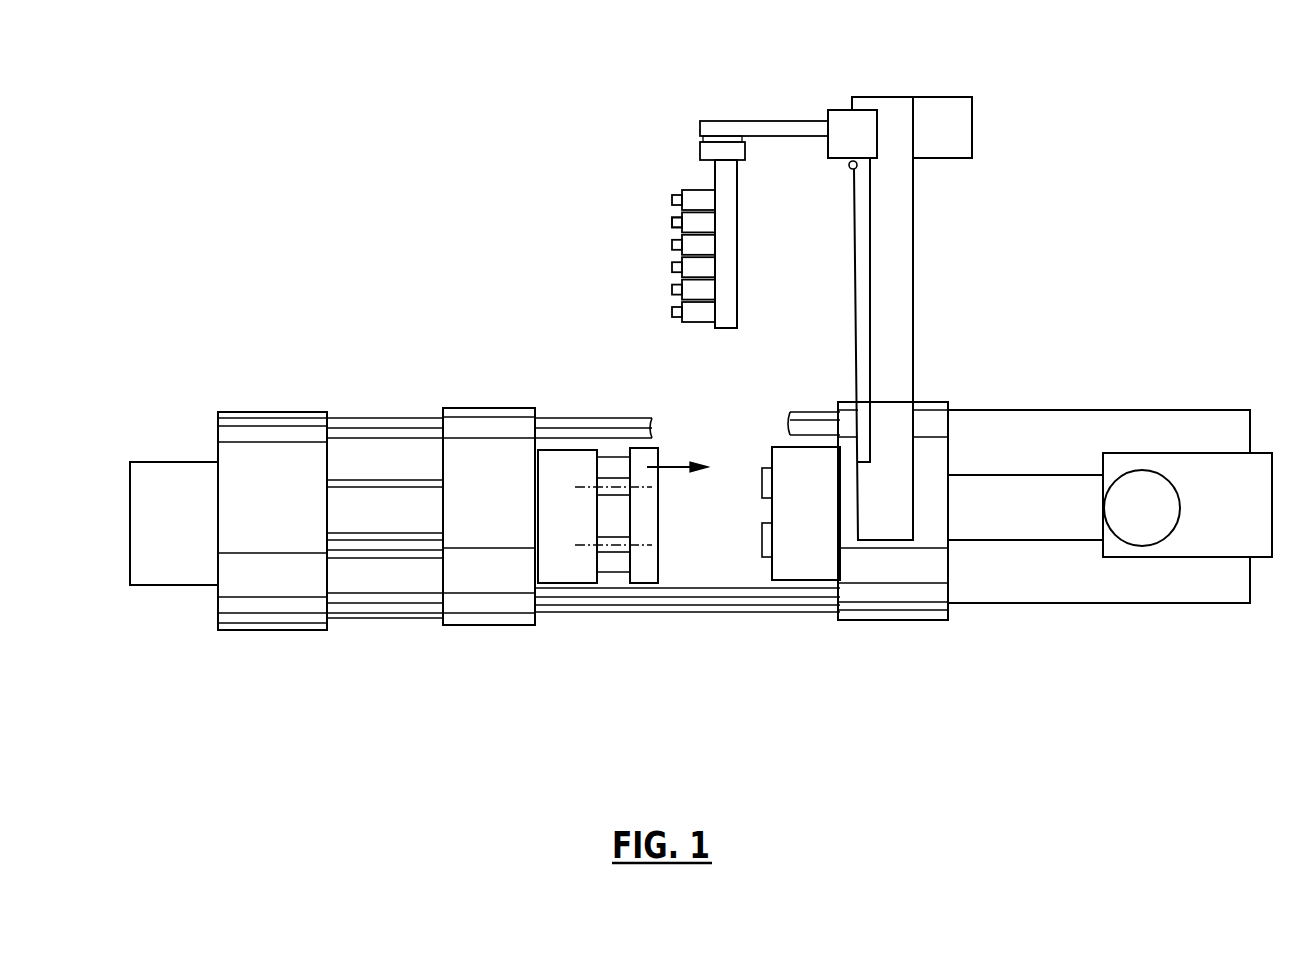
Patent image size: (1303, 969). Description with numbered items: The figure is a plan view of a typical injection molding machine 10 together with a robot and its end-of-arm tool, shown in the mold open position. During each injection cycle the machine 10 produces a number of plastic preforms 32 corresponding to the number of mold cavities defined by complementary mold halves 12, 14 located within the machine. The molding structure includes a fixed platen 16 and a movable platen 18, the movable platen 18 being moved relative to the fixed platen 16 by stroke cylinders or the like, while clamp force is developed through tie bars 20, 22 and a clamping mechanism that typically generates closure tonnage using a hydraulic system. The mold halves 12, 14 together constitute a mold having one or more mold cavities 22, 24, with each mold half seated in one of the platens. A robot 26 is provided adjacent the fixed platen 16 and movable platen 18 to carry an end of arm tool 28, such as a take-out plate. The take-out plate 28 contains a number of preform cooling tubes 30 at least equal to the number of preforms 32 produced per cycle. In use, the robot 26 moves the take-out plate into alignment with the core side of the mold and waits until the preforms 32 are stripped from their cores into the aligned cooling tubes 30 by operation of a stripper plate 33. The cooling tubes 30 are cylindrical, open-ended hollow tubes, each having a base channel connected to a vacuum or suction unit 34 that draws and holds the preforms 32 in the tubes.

The injection molding machine 10 is at (448, 108).
The mold half 12 is at (793, 565).
The mold half 14 is at (568, 567).
The fixed platen 16 is at (897, 597).
The movable platen 18 is at (490, 415).
The tie bar 20 is at (590, 417).
The tie bar 22 is at (412, 618).
The mold cavity 24 is at (758, 543).
The robot 26 is at (838, 108).
The end of arm tool (take-out plate) 28 is at (730, 272).
The cooling tube 30 is at (688, 190).
The preform 32 is at (673, 218).
The stripper plate 33 is at (655, 497).
The vacuum or suction unit 34 is at (963, 117).